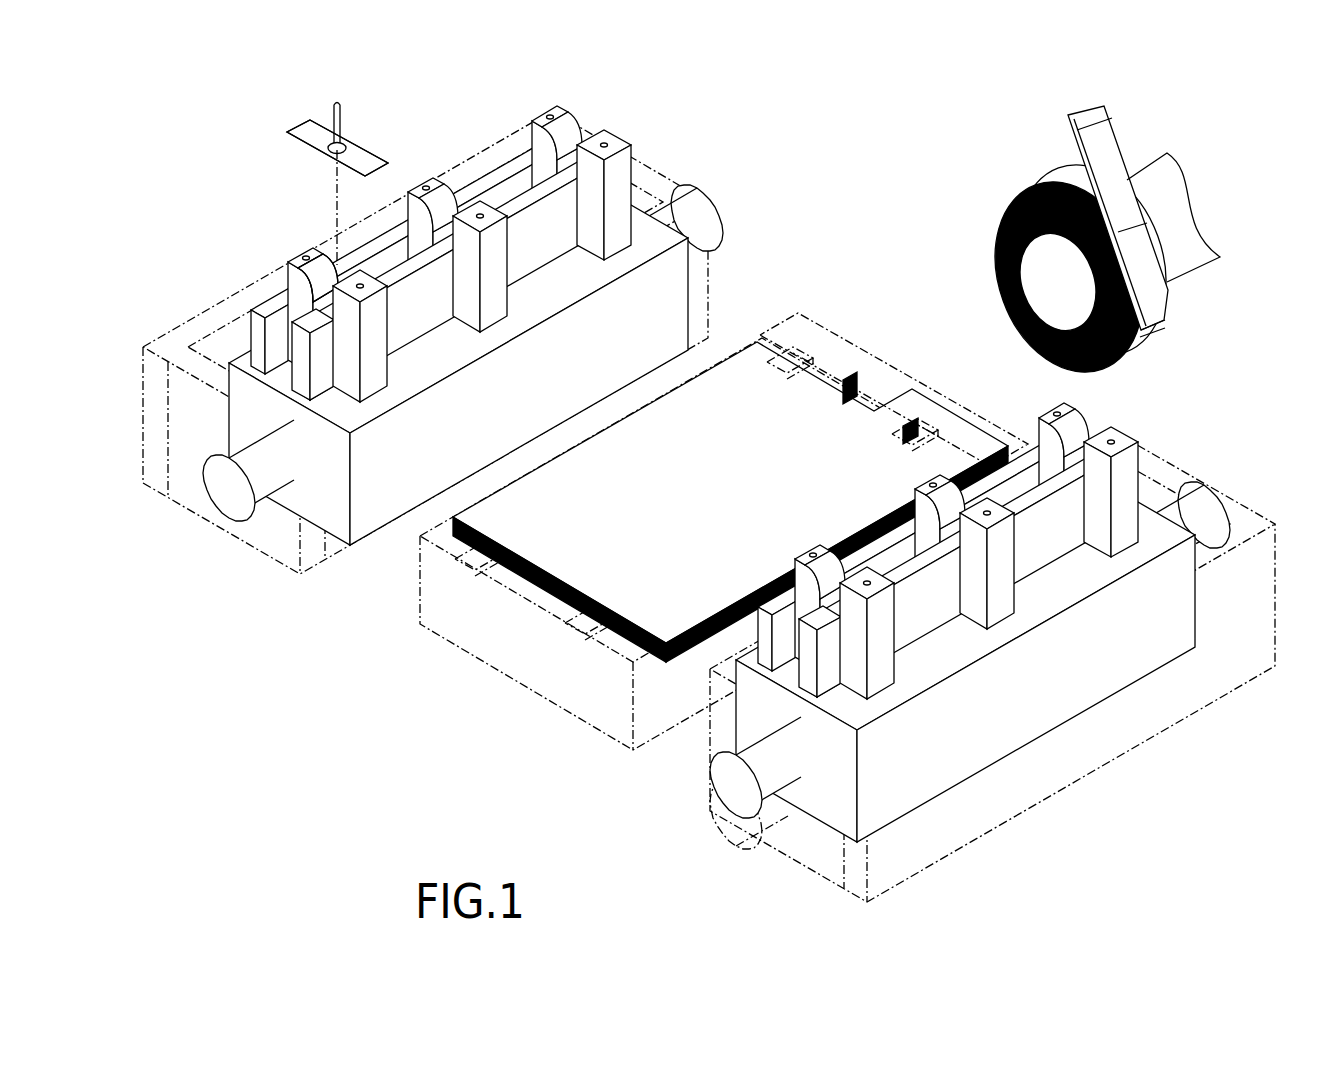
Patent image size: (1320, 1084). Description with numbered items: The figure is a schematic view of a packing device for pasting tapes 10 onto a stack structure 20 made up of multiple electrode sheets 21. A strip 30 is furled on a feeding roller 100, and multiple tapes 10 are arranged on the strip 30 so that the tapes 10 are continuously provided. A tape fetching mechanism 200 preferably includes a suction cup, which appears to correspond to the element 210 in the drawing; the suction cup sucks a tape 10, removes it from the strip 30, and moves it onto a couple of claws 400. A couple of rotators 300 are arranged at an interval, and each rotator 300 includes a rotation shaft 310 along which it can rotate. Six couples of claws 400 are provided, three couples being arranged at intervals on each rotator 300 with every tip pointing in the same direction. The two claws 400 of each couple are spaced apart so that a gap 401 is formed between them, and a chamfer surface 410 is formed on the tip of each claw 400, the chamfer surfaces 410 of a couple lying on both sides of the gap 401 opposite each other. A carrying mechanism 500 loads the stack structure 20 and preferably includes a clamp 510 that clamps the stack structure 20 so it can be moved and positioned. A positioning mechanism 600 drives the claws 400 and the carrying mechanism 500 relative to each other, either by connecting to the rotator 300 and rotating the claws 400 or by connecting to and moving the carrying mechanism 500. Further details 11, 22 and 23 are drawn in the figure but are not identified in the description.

The tape 10 is at (300, 124).
The cut metal piece 11 is at (363, 160).
The stack structure 20 is at (612, 648).
The electrode sheet 21 is at (478, 501).
The pad 22 is at (525, 585).
The pad 23 is at (562, 606).
The strip 30 is at (1166, 322).
The feeding roller 100 is at (1032, 276).
The tape fetching mechanism 200 is at (347, 123).
The hole 210 is at (322, 140).
The rotator 300 is at (670, 298).
The rotation shaft 310 is at (225, 497).
The claw 400 is at (284, 276).
The gap 401 is at (313, 303).
The chamfer surface 410 is at (322, 270).
The carrying mechanism 500 is at (893, 381).
The clamp 510 is at (792, 358).
The positioning mechanism 600 is at (162, 500).